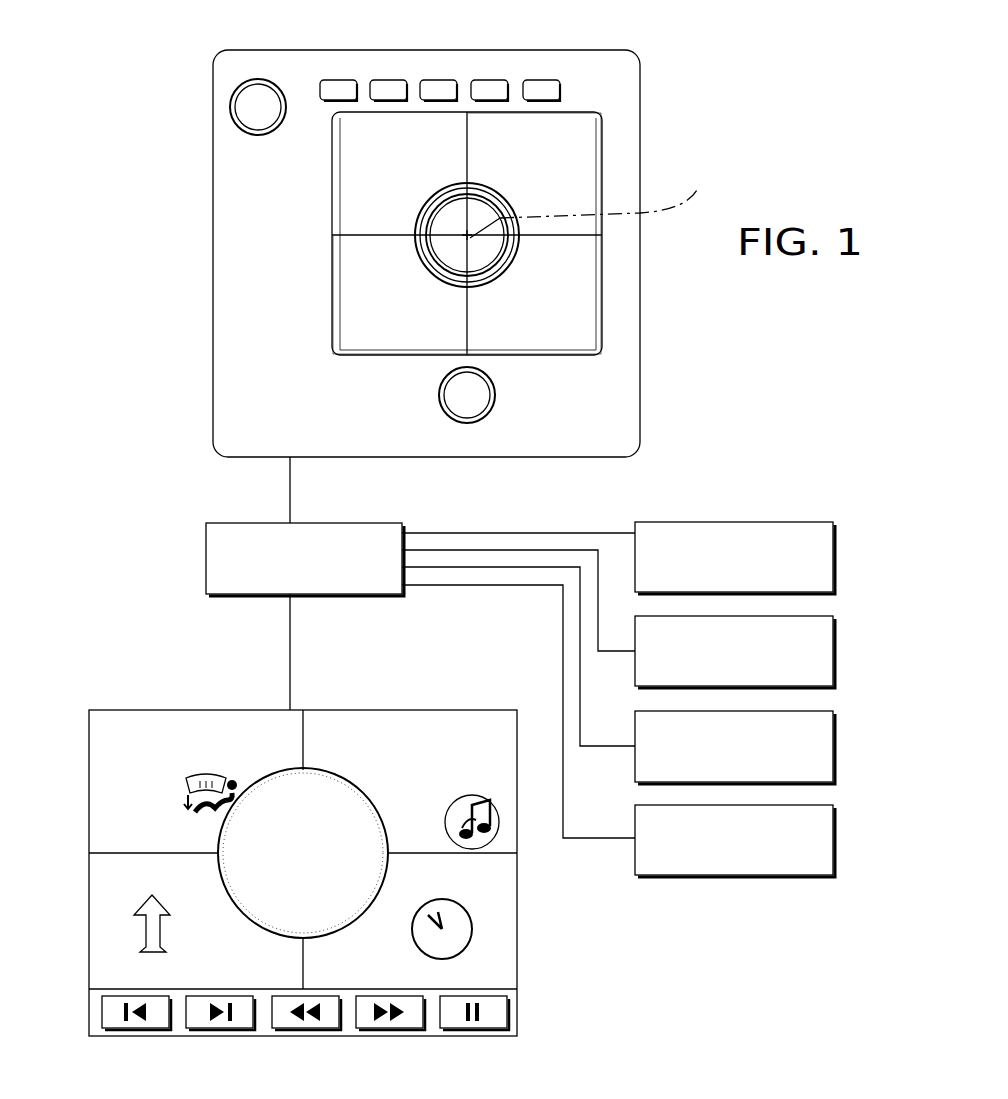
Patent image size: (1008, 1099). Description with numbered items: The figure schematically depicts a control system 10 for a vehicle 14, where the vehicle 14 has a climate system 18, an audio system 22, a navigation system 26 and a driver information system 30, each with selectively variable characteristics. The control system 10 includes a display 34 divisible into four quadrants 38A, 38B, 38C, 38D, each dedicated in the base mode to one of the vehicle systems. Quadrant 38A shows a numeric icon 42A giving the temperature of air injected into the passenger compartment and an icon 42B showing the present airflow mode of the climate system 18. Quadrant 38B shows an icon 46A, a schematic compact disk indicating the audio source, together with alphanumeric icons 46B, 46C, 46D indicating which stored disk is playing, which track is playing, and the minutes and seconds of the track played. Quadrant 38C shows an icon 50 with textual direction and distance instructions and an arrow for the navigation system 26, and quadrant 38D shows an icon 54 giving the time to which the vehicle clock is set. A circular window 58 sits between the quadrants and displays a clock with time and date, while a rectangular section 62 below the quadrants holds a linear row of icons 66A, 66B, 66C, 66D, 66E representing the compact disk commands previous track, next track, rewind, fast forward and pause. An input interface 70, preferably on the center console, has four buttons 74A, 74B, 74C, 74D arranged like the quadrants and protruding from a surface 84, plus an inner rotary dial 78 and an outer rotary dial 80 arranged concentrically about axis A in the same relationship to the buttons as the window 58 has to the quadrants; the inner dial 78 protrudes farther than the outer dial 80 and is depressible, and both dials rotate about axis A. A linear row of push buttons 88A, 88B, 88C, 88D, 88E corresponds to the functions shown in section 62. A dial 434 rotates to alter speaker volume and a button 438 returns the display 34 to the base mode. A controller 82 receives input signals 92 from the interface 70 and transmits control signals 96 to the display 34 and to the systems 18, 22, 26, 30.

The control system 10 is at (106, 203).
The vehicle 14 is at (746, 456).
The climate system 18 is at (835, 560).
The audio system 22 is at (835, 652).
The navigation system 26 is at (835, 746).
The driver information system 30 is at (835, 840).
The display 34 is at (89, 783).
The quadrant 38A is at (112, 732).
The quadrant 38B is at (476, 727).
The quadrant 38C is at (114, 932).
The quadrant 38D is at (490, 962).
The numeric icon 42A is at (106, 775).
The airflow mode icon 42B is at (221, 758).
The audio source icon 46A is at (504, 836).
The disk icon 46B is at (374, 783).
The track icon 46C is at (354, 759).
The elapsed time icon 46D is at (434, 804).
The navigation icon 50 is at (107, 920).
The driver information icon 54 is at (486, 932).
The circular window 58 is at (280, 772).
The rectangular section 62 is at (508, 1006).
The previous track icon 66A is at (155, 1013).
The next track icon 66B is at (240, 1013).
The rewind icon 66C is at (328, 1013).
The fast forward icon 66D is at (422, 1013).
The pause icon 66E is at (488, 1013).
The input interface 70 is at (260, 352).
The button 74A is at (360, 190).
The button 74B is at (568, 155).
The button 74C is at (357, 266).
The button 74D is at (568, 298).
The inner rotary dial 78 is at (448, 256).
The outer rotary dial 80 is at (420, 257).
The controller 82 is at (206, 560).
The surface 84 is at (585, 410).
The push button 88A is at (338, 80).
The push button 88B is at (390, 80).
The push button 88C is at (441, 80).
The push button 88D is at (490, 80).
The push button 88E is at (543, 80).
The input signals 92 is at (288, 497).
The control signals 96 is at (291, 646).
The volume dial 434 is at (231, 107).
The home button 438 is at (463, 424).
The axis A is at (586, 202).